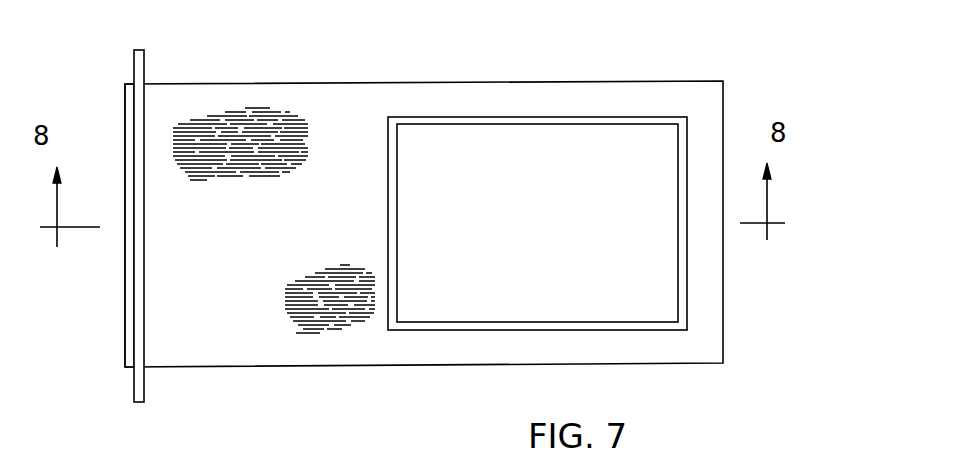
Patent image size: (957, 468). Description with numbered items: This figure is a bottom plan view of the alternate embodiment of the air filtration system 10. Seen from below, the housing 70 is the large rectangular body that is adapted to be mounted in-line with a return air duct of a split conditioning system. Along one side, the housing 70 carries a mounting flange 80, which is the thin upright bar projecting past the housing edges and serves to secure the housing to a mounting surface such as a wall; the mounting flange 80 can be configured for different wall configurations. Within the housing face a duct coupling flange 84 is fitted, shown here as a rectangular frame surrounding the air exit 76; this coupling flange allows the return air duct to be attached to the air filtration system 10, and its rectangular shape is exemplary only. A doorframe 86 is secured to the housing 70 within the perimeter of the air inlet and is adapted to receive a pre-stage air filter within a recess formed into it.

The air filtration system 10 is at (410, 238).
The housing 70 is at (292, 82).
The air exit 76 is at (537, 273).
The mounting flange 80 is at (138, 65).
The duct coupling flange 84 is at (575, 120).
The doorframe 86 is at (130, 340).